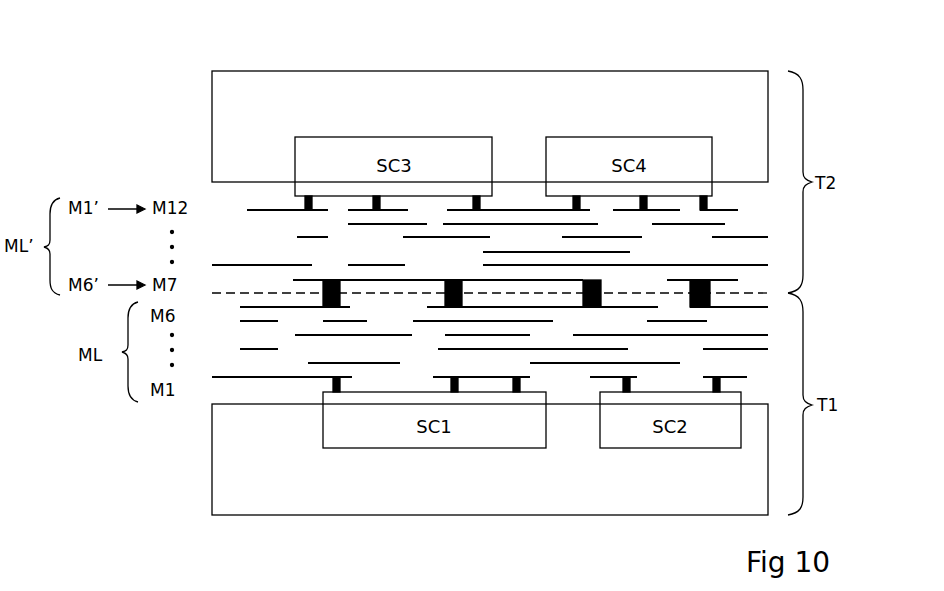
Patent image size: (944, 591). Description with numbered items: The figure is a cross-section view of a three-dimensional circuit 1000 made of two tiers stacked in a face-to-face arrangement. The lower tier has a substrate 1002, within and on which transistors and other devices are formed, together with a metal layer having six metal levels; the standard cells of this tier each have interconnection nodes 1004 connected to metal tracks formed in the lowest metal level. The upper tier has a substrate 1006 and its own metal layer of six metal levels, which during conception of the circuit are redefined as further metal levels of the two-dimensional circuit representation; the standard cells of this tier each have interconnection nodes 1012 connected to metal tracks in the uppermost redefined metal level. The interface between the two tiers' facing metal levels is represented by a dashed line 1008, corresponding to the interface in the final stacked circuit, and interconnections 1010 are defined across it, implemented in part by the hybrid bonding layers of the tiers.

The 3D circuit 1000 is at (797, 52).
The substrate 1002 is at (752, 477).
The interconnection nodes 1004 is at (332, 380).
The substrate 1006 is at (748, 112).
The dashed line 1008 is at (760, 292).
The interconnections 1010 is at (345, 290).
The interconnection nodes 1012 is at (371, 204).